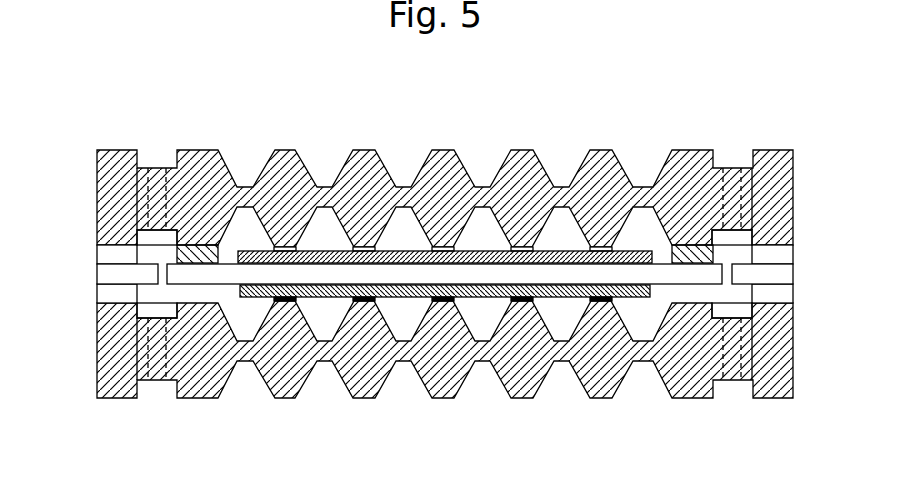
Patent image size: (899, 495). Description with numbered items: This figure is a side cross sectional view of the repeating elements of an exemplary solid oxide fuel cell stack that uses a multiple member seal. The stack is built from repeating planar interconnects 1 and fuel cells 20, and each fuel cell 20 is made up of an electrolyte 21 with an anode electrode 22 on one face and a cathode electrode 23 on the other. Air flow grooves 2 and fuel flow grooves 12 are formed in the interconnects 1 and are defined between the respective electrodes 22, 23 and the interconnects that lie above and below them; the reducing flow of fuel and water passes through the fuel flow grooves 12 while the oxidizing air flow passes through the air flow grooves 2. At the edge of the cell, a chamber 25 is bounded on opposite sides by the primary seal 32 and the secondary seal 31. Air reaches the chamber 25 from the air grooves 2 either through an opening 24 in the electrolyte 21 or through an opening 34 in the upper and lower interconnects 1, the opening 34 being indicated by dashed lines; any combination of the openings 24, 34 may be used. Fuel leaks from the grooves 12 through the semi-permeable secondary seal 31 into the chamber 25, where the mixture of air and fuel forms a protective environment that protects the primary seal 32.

The planar interconnect 1 is at (795, 147).
The air flow groove 2 is at (248, 322).
The fuel flow groove 12 is at (405, 214).
The fuel cell 20 is at (197, 290).
The electrolyte 21 is at (226, 263).
The anode electrode 22 is at (583, 244).
The cathode electrode 23 is at (403, 300).
The opening in the electrolyte 24 is at (162, 273).
The chamber 25 is at (158, 238).
The secondary seal 31 is at (197, 242).
The primary seal 32 is at (94, 258).
The opening in the interconnect 34 is at (142, 206).